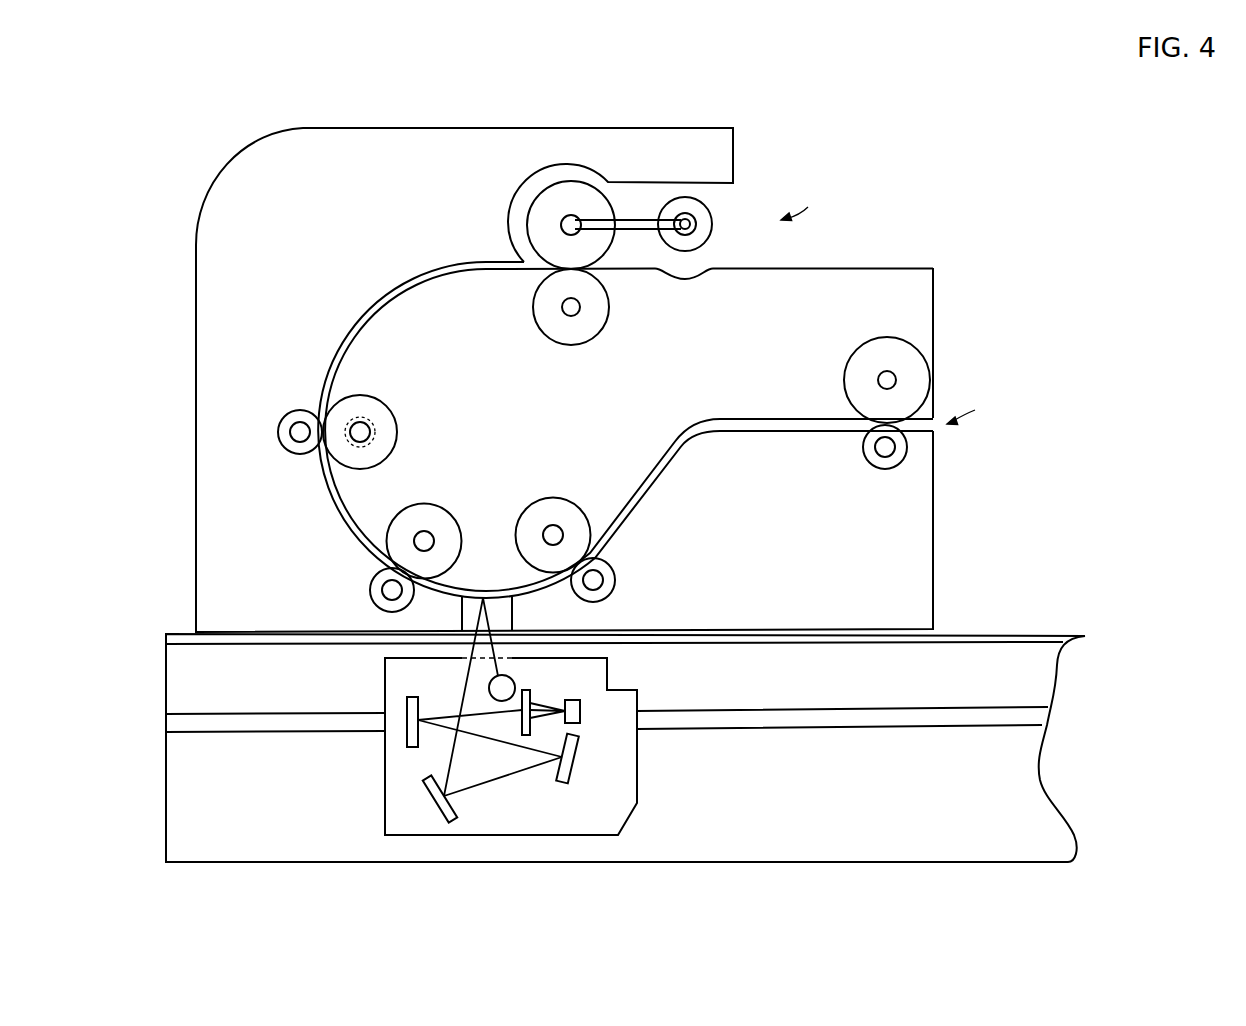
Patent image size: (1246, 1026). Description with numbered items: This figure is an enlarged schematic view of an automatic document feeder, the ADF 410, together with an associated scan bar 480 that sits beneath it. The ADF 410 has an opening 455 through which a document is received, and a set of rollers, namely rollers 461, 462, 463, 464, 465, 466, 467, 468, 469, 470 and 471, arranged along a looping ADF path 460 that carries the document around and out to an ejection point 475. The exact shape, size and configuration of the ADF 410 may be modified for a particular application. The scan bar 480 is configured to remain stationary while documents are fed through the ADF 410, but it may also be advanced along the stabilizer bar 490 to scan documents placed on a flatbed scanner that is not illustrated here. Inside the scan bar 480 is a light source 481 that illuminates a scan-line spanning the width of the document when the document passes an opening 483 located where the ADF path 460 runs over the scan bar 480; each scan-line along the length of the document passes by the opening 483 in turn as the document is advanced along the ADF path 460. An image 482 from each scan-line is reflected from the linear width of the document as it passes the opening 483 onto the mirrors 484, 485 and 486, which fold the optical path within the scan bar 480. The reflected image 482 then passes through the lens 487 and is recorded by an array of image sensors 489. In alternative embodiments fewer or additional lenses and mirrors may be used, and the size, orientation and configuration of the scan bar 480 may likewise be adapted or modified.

The ADF 410 is at (247, 163).
The opening 455 is at (806, 200).
The ADF path 460 is at (364, 333).
The roller 461 is at (712, 235).
The roller 462 is at (576, 182).
The roller 463 is at (606, 328).
The roller 464 is at (279, 441).
The roller 465 is at (398, 436).
The roller 466 is at (421, 504).
The roller 467 is at (371, 598).
The roller 468 is at (527, 507).
The roller 469 is at (613, 592).
The roller 470 is at (850, 359).
The roller 471 is at (865, 454).
The ejection point 475 is at (972, 404).
The scan bar 480 is at (629, 812).
The light source 481 is at (513, 682).
The image 482 is at (490, 782).
The opening 483 is at (513, 624).
The mirror 484 is at (440, 814).
The mirror 485 is at (569, 782).
The mirror 486 is at (411, 697).
The lens 487 is at (533, 700).
The array of image sensors 489 is at (582, 712).
The stabilizer bar 490 is at (792, 729).